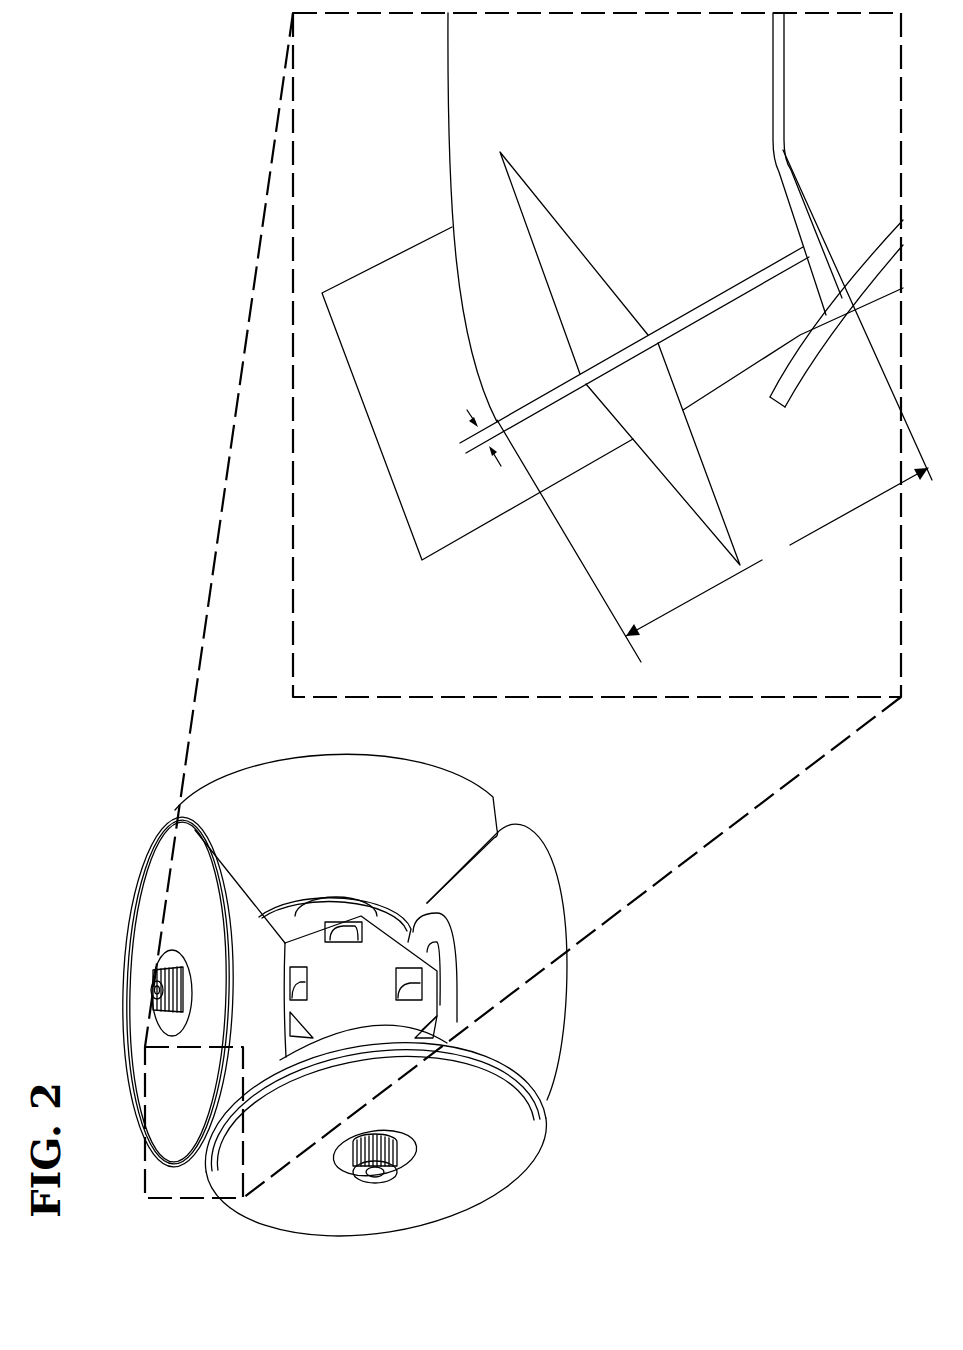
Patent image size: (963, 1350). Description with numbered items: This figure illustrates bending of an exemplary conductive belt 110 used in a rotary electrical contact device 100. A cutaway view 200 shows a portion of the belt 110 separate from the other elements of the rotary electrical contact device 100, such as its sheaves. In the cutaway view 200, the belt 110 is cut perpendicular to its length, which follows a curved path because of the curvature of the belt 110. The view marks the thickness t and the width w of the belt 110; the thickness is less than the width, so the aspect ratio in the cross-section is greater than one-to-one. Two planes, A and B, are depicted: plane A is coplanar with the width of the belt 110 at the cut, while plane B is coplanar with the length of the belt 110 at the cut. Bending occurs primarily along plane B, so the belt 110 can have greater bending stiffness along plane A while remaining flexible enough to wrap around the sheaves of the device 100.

The rotary electrical contact device 100 is at (97, 787).
The belt 110 is at (450, 150).
The cutaway view 200 is at (292, 548).